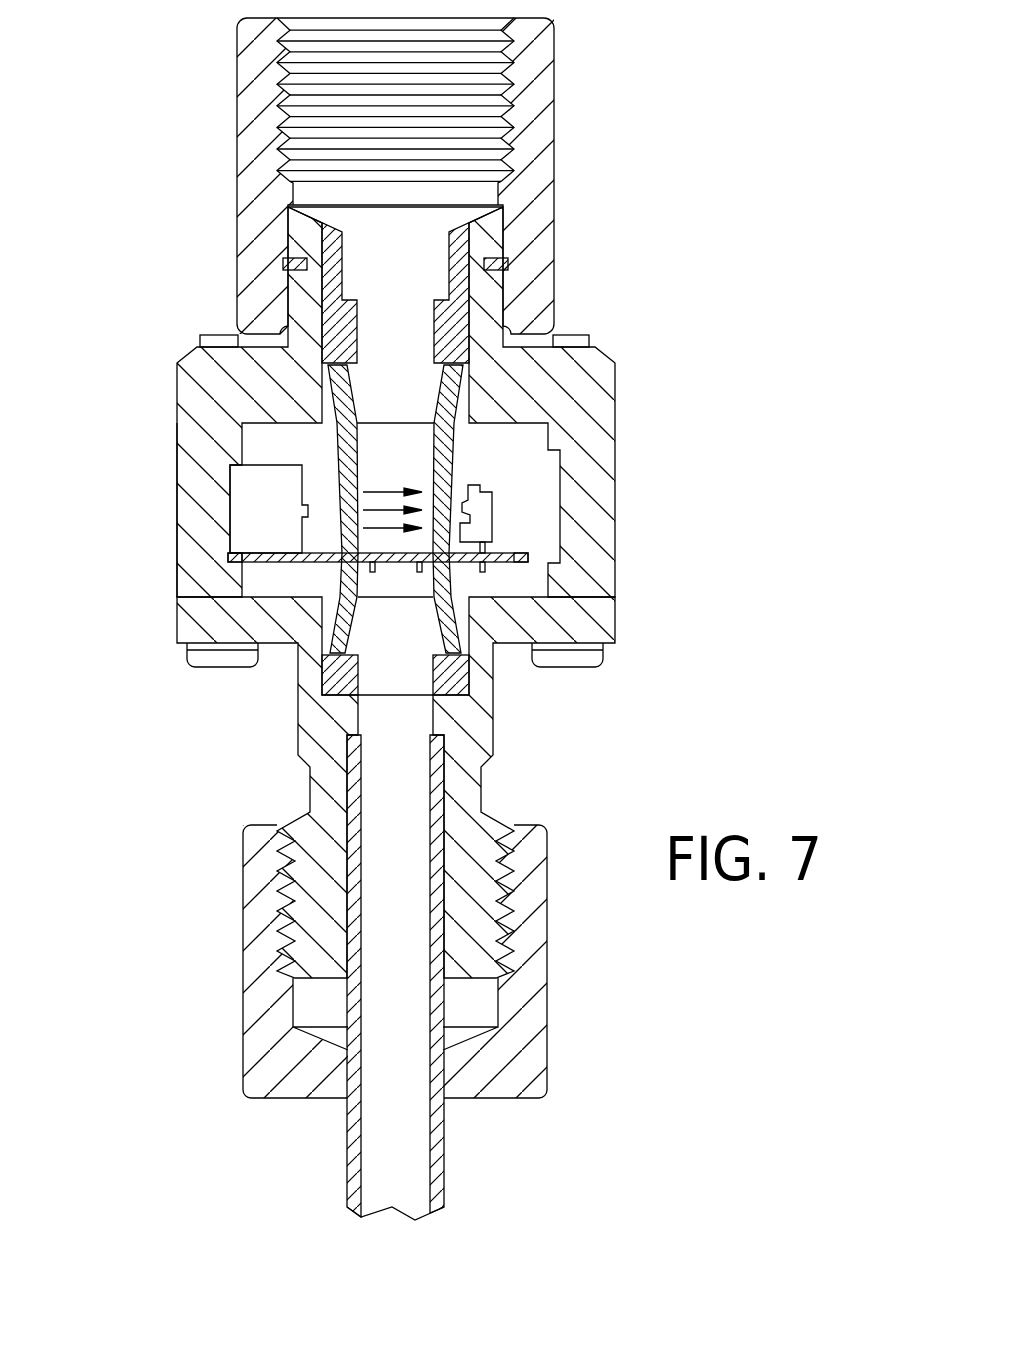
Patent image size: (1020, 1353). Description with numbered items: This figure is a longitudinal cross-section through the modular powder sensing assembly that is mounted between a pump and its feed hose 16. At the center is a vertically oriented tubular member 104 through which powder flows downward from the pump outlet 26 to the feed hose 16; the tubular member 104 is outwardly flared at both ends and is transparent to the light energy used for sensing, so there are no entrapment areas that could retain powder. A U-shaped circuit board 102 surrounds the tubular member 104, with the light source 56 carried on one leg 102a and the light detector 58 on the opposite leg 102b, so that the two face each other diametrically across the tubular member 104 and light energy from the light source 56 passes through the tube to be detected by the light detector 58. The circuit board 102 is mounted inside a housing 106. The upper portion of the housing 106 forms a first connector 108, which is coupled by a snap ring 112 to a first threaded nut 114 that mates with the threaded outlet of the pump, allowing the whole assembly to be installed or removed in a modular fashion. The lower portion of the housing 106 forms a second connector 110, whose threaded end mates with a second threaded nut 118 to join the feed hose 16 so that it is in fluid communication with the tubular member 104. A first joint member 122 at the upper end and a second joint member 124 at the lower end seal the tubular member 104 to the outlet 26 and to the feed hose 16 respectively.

The feed hose 16 is at (445, 1143).
The outlet 26 is at (266, 181).
The light source 56 is at (248, 500).
The light detector 58 is at (505, 505).
The circuit board 102 is at (541, 567).
The leg 102a is at (277, 562).
The opposite leg 102b is at (518, 553).
The tubular member 104 is at (452, 460).
The housing 106 is at (177, 552).
The first connector 108 is at (595, 348).
The second connector 110 is at (605, 621).
The snap ring 112 is at (505, 258).
The first threaded nut 114 is at (543, 143).
The second threaded nut 118 is at (243, 1010).
The first joint member 122 is at (333, 310).
The second joint member 124 is at (455, 685).